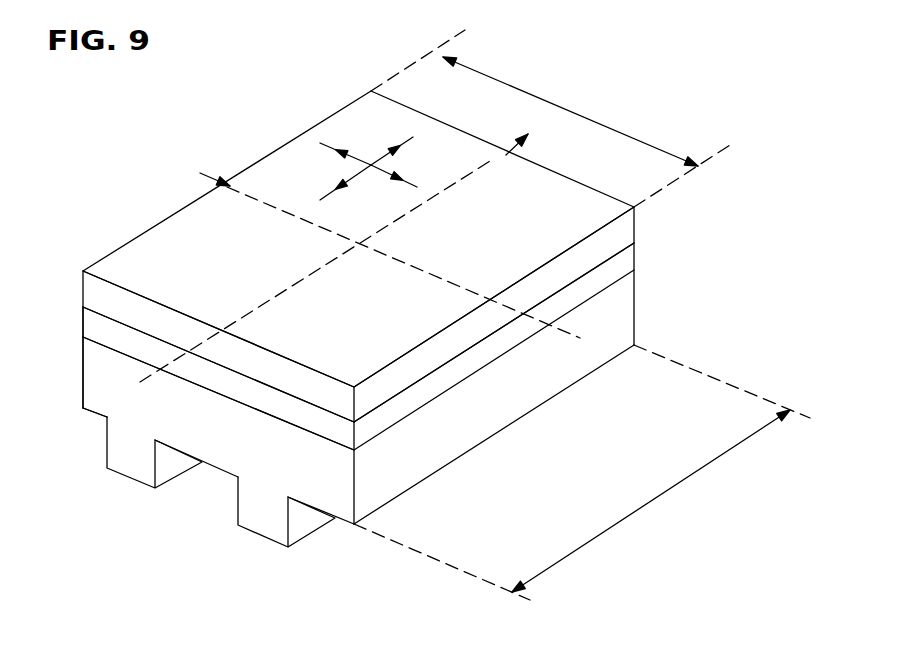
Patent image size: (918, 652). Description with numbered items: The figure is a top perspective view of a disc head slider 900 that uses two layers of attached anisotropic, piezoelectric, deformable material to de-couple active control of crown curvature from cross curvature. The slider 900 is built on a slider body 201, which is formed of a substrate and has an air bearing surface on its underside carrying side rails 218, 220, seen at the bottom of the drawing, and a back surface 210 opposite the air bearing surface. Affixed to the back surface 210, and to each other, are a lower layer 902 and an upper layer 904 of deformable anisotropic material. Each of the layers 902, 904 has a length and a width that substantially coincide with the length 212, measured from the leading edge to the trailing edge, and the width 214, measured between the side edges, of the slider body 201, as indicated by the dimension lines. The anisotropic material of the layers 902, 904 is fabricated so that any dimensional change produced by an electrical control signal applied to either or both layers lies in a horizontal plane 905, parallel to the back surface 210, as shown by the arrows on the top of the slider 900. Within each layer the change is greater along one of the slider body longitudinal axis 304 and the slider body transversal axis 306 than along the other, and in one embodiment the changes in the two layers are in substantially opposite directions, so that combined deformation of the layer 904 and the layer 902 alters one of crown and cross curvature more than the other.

The slider 900 is at (137, 213).
The layer of deformable anisotropic material 904 is at (625, 228).
The layer of deformable anisotropic material 902 is at (622, 260).
The back surface 210 is at (100, 340).
The slider body 201 is at (118, 392).
The side rail 220 is at (138, 483).
The side rail 218 is at (243, 530).
The width 214 is at (560, 83).
The length 212 is at (645, 505).
The horizontal plane 905 is at (371, 165).
The slider body transversal axis 306 is at (254, 198).
The slider body longitudinal axis 304 is at (334, 241).